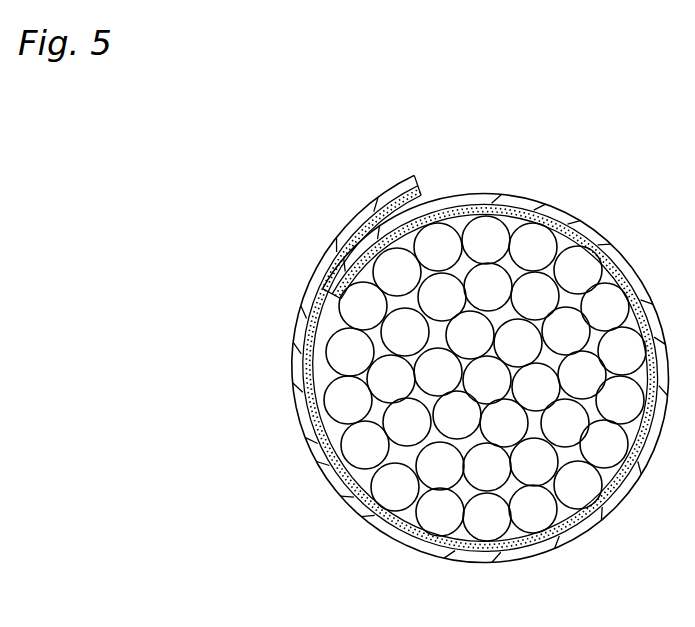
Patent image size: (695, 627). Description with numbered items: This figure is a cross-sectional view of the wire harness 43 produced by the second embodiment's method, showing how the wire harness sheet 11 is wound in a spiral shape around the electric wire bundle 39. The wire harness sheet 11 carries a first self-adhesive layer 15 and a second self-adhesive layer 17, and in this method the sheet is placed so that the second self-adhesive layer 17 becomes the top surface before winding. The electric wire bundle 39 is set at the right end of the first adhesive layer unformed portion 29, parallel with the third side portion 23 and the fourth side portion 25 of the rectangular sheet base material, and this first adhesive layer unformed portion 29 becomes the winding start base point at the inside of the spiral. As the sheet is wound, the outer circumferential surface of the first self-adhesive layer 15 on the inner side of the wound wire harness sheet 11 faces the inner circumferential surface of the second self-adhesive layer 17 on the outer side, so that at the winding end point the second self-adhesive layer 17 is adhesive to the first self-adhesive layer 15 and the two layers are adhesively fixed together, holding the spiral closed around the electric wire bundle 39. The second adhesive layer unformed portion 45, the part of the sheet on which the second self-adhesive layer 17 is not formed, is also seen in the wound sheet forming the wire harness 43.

The wire harness 43 is at (290, 226).
The wire harness sheet 11 is at (307, 466).
The electric wire bundle 39 is at (484, 523).
The first self-adhesive layer 15 is at (362, 210).
The second adhesive layer unformed portion 45 is at (361, 520).
The second self-adhesive layer 17 is at (318, 352).
The fourth side portion 25 is at (333, 285).
The third side portion 23 is at (423, 180).
The first adhesive layer unformed portion 29 is at (432, 212).